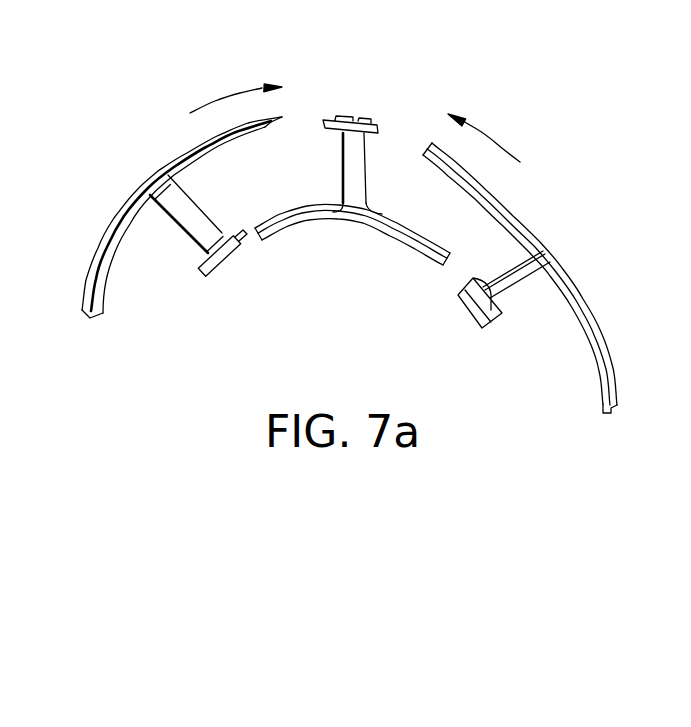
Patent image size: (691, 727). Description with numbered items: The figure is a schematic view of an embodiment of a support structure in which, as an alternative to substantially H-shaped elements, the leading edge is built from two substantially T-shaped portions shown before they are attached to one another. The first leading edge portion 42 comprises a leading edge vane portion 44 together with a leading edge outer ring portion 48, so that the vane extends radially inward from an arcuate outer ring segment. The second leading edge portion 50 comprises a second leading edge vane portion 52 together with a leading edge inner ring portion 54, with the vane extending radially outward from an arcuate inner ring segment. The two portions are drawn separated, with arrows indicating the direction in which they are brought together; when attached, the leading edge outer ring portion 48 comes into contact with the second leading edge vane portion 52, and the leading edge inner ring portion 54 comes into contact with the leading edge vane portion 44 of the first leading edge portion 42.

The first leading edge portion 42 is at (379, 235).
The leading edge vane portion 44 is at (185, 212).
The leading edge outer ring portion 48 is at (186, 150).
The second leading edge portion 50 is at (362, 205).
The second leading edge vane portion 52 is at (355, 163).
The leading edge inner ring portion 54 is at (303, 223).